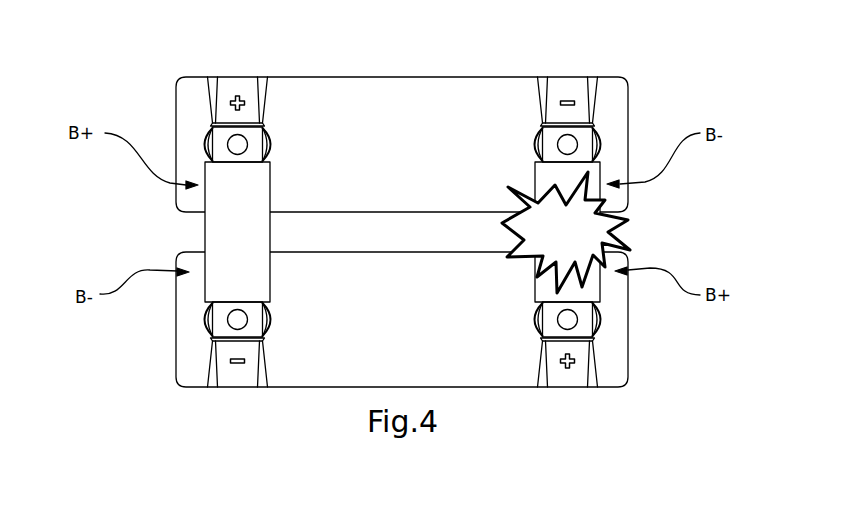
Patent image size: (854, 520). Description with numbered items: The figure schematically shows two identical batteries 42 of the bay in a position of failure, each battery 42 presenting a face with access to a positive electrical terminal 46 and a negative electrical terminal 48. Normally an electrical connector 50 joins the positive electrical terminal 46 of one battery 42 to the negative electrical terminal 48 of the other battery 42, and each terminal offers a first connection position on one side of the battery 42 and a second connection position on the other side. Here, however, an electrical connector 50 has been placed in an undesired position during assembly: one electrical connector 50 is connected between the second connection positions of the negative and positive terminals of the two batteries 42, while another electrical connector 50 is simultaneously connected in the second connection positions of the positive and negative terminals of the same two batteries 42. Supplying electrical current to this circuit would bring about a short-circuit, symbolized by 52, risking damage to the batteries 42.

The battery 42 is at (430, 295).
The positive electrical terminal 46 is at (207, 142).
The negative electrical terminal 48 is at (602, 139).
The electrical connector 50 is at (205, 232).
The short-circuit 52 is at (597, 230).